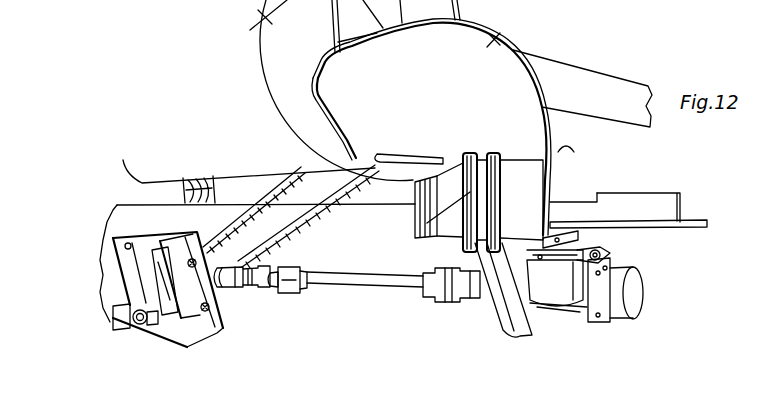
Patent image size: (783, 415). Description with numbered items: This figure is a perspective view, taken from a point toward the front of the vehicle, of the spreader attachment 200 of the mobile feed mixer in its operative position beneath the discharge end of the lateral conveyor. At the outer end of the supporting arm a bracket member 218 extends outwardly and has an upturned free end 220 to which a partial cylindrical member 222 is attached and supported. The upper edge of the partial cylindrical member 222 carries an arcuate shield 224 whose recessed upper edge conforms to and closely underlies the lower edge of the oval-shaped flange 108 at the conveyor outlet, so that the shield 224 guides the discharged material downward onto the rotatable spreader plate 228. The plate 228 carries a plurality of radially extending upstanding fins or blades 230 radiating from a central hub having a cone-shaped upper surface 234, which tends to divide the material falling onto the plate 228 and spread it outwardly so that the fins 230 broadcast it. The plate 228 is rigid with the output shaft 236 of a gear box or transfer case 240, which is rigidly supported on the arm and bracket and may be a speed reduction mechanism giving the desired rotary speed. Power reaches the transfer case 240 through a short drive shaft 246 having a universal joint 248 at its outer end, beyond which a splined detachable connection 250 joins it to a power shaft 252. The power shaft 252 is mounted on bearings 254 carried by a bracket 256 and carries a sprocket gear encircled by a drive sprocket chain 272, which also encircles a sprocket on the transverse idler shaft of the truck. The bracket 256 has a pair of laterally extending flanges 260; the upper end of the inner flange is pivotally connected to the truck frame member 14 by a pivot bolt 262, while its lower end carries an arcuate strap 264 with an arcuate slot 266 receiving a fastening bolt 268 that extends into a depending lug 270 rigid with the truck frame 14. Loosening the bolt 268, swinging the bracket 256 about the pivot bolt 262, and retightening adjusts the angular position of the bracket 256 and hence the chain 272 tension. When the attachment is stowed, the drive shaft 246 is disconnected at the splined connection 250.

The spreader attachment 200 is at (42, 0).
The oval-shaped flange 108 is at (262, 20).
The arcuate shield 224 is at (487, 42).
The cone-shaped upper surface 234 is at (562, 154).
The partial cylindrical member 222 is at (538, 193).
The radially extending upstanding fins or blades 230 is at (662, 192).
The rotatable spreader plate 228 is at (707, 227).
The output shaft 236 is at (580, 243).
The upturned free end 220 is at (417, 222).
The truck frame 14 is at (115, 206).
The drive sprocket chain 272 is at (245, 217).
The bearings 254 is at (234, 248).
The pivot bolt 262 is at (124, 243).
The laterally extending flanges 260 is at (105, 276).
The depending lug 270 is at (105, 307).
The arcuate strap 264 is at (113, 321).
The arcuate slot 266 is at (128, 323).
The fastening bolt 268 is at (163, 331).
The bracket 256 is at (213, 333).
The power shaft 252 is at (233, 289).
The splined detachable connection 250 is at (249, 288).
The universal joint 248 is at (290, 291).
The short drive shaft 246 is at (377, 289).
The bracket member 218 is at (498, 323).
The gear box or transfer case 240 is at (584, 326).